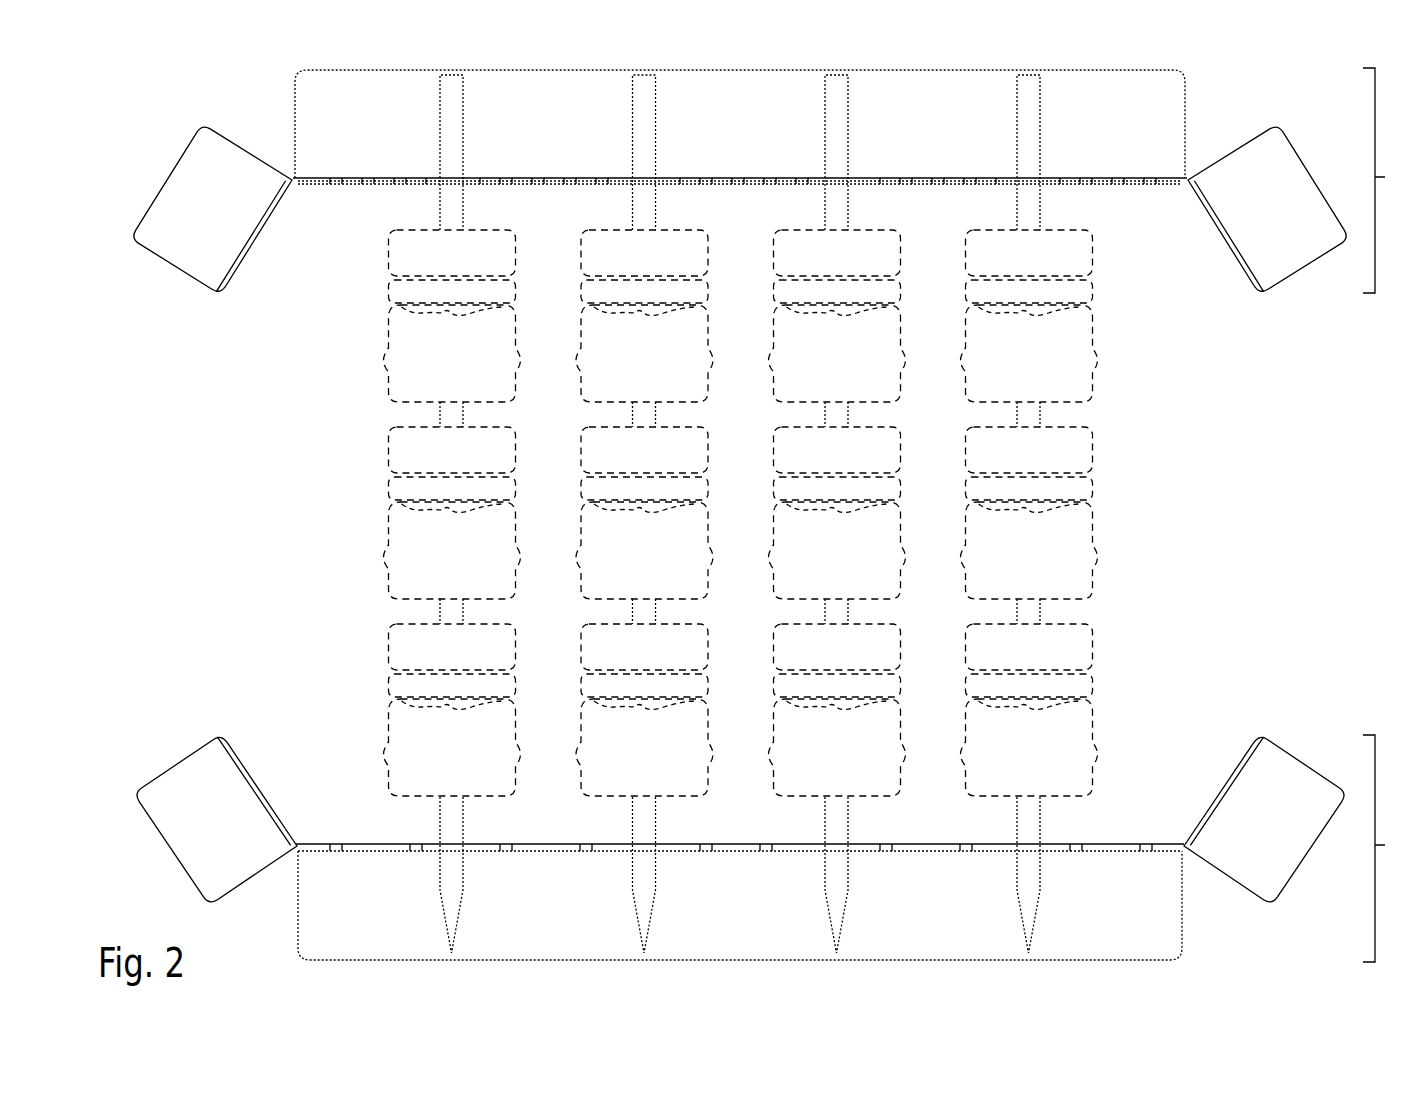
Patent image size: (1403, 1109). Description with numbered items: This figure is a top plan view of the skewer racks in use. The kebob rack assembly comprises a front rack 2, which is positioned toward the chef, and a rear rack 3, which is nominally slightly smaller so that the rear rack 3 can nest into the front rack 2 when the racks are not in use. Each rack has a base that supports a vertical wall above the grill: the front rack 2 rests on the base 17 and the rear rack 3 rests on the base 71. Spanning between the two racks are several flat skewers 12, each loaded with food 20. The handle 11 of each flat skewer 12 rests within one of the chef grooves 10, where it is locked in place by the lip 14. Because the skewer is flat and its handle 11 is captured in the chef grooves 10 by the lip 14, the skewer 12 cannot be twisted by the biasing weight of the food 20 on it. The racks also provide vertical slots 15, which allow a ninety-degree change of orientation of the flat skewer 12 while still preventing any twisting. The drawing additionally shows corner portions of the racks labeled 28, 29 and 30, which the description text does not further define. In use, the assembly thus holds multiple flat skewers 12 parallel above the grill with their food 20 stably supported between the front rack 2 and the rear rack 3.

The front rack 2 is at (1382, 180).
The rear rack 3 is at (1382, 848).
The chef grooves 10 is at (1000, 187).
The handle 11 is at (1032, 115).
The flat skewer 12 is at (1028, 830).
The lip 14 is at (1032, 183).
The vertical slots 15 is at (932, 185).
The base 17 is at (1165, 112).
The food 20 is at (1053, 568).
The corner flap 28 is at (195, 253).
The corner flap 29 is at (1278, 258).
The corner flap 30 is at (190, 772).
The base 71 is at (1172, 910).